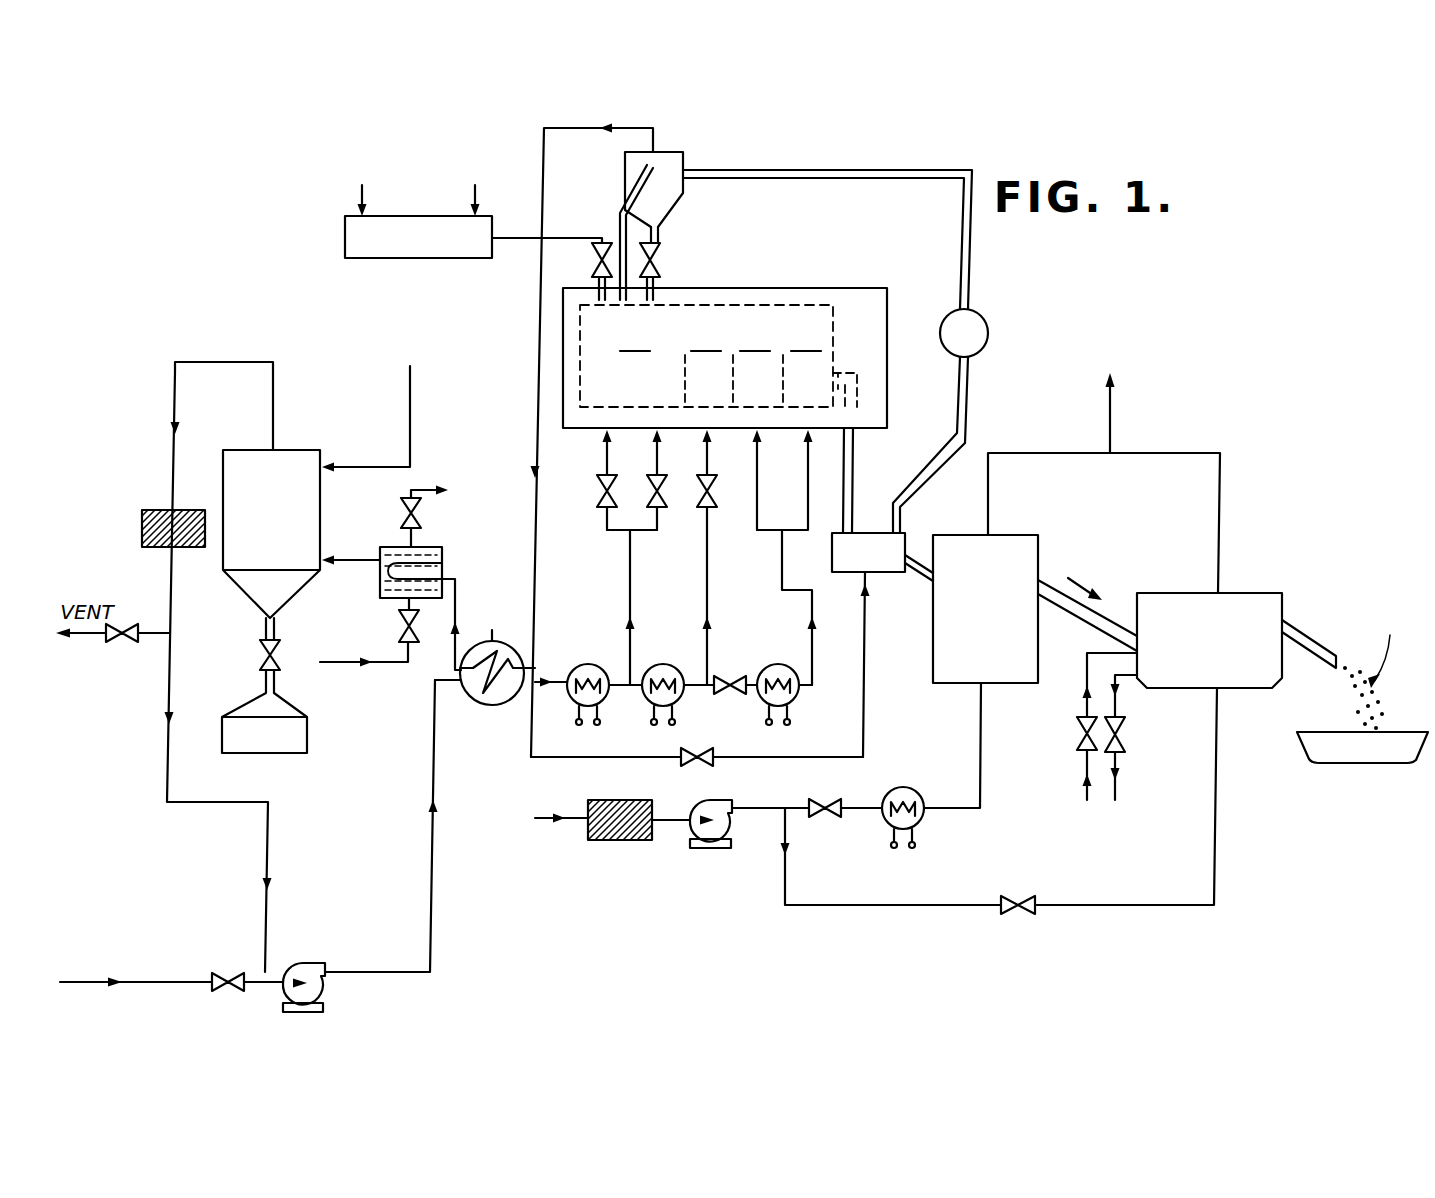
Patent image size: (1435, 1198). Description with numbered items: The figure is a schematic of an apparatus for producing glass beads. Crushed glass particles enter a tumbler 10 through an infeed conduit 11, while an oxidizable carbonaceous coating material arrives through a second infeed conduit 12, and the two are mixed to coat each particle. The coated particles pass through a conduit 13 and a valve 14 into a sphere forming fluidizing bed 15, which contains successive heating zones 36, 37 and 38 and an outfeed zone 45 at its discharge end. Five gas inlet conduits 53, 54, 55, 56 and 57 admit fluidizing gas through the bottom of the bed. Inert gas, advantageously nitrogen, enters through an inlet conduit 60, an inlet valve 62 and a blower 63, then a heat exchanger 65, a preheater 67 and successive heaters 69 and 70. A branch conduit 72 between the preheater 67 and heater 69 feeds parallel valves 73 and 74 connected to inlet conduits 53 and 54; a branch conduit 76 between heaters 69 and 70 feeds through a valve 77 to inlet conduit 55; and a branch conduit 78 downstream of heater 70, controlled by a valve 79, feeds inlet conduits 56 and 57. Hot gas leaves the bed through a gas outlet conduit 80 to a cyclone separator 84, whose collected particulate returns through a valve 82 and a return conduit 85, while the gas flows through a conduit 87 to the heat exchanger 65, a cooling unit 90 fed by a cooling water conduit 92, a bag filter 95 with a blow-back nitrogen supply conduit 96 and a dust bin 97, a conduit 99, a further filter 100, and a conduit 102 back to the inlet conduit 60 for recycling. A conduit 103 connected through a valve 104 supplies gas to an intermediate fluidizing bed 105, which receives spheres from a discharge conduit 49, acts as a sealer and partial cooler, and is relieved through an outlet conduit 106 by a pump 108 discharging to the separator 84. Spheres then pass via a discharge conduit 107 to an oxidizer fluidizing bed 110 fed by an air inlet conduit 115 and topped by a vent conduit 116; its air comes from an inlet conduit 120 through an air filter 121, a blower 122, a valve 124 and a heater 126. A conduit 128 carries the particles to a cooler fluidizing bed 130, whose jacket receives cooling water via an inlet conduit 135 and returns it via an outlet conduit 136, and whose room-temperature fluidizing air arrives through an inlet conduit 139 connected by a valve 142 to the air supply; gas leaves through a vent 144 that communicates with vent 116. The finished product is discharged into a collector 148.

The tumbler 10 is at (345, 238).
The infeed conduit 11 is at (358, 190).
The infeed conduit 12 is at (472, 190).
The conduit 13 is at (559, 237).
The valve 14 is at (594, 262).
The fluidizing bed 15 is at (898, 318).
The heating zone 36 is at (638, 339).
The heating zone 37 is at (706, 366).
The heating zone 38 is at (754, 366).
The outfeed zone 45 is at (805, 366).
The discharge conduit 49 is at (857, 481).
The gas inlet conduit 53 is at (604, 436).
The gas inlet conduit 54 is at (655, 437).
The gas inlet conduit 55 is at (705, 437).
The gas inlet conduit 56 is at (755, 437).
The gas inlet conduit 57 is at (806, 437).
The inlet conduit 60 is at (186, 986).
The inlet valve 62 is at (232, 994).
The blower 63 is at (312, 950).
The heat exchanger 65 is at (485, 654).
The preheater 67 is at (593, 665).
The heater 69 is at (669, 665).
The heater 70 is at (783, 665).
The branch conduit 72 is at (628, 597).
The valve 73 is at (602, 492).
The valve 74 is at (661, 500).
The branch conduit 76 is at (704, 597).
The valve 77 is at (713, 498).
The branch conduit 78 is at (785, 592).
The valve 79 is at (733, 696).
The gas outlet conduit 80 is at (638, 177).
The valve 82 is at (663, 258).
The cyclone separator 84 is at (687, 158).
The return conduit 85 is at (661, 242).
The conduit 87 is at (548, 136).
The cooling unit 90 is at (434, 548).
The conduit 92 is at (407, 665).
The bag filter 95 is at (303, 452).
The blow-back nitrogen supply conduit 96 is at (413, 432).
The dust bin 97 is at (308, 740).
The conduit 99 is at (240, 362).
The filter 100 is at (154, 510).
The conduit 102 is at (170, 781).
The conduit 103 is at (866, 704).
The valve 104 is at (700, 768).
The intermediate fluidizing bed 105 is at (832, 554).
The outlet conduit 106 is at (969, 395).
The discharge conduit 107 is at (918, 580).
The pump 108 is at (988, 323).
The oxidizer fluidizing bed 110 is at (955, 522).
The air inlet conduit 115 is at (978, 730).
The vent conduit 116 is at (990, 478).
The inlet conduit 120 is at (577, 824).
The air filter 121 is at (612, 840).
The blower 122 is at (714, 850).
The valve 124 is at (820, 804).
The heater 126 is at (906, 794).
The conduit 128 is at (1079, 613).
The cooler fluidizing bed 130 is at (1181, 593).
The inlet conduit 135 is at (1081, 706).
The outlet conduit 136 is at (1120, 703).
The inlet conduit 139 is at (1215, 830).
The valve 142 is at (1020, 915).
The vent 144 is at (1220, 478).
The collector 148 is at (1320, 732).